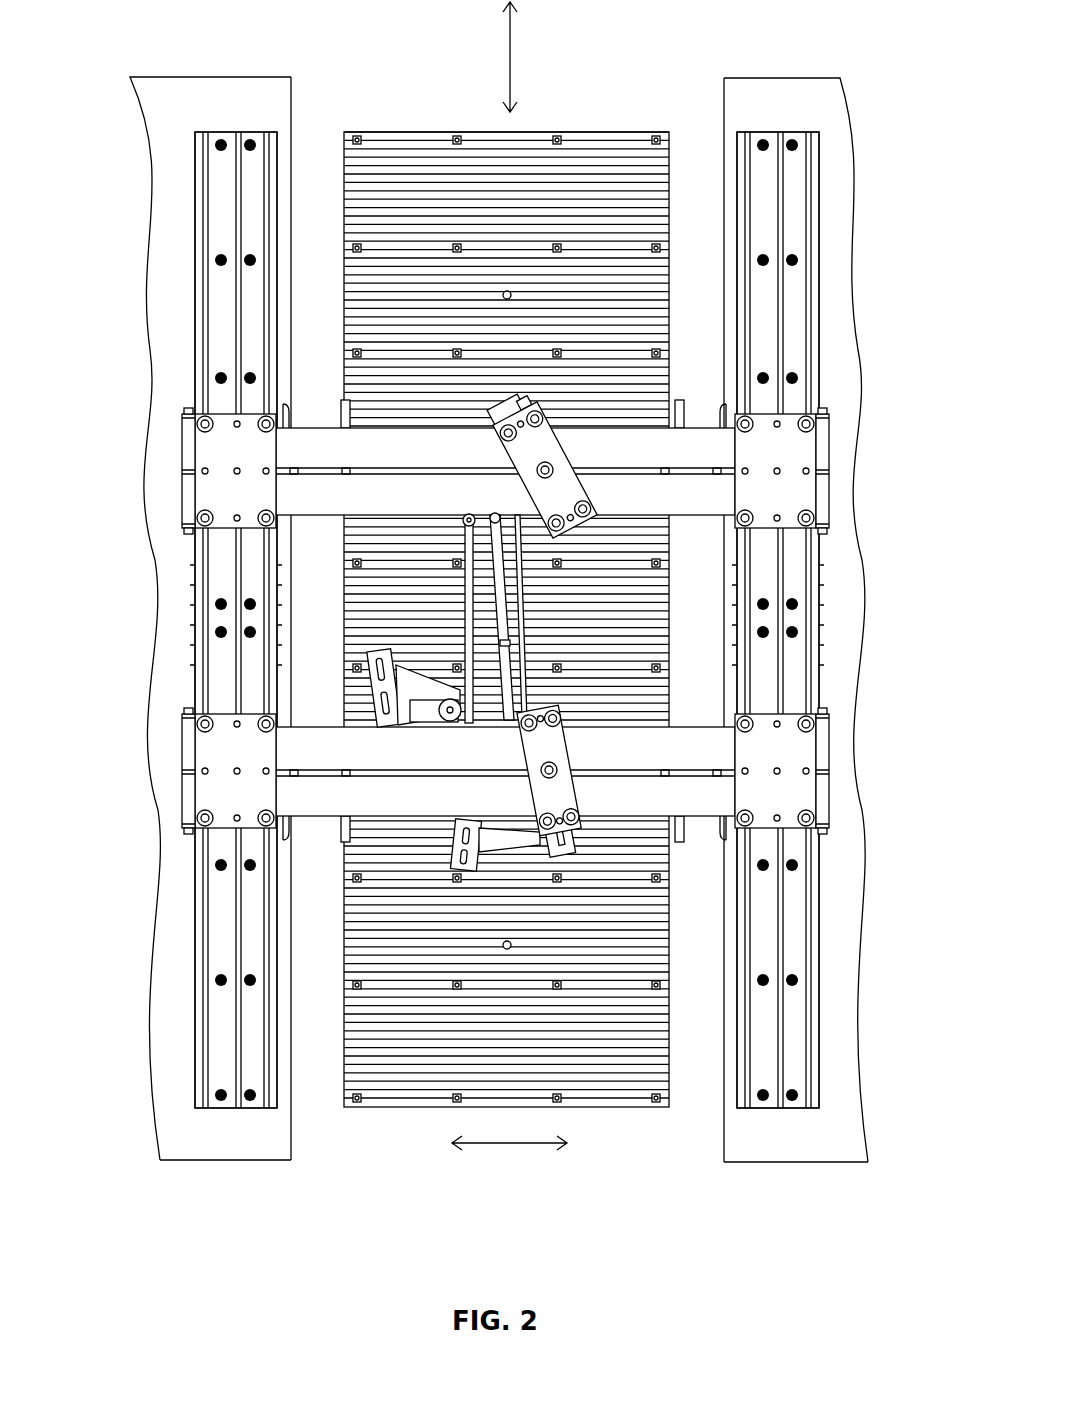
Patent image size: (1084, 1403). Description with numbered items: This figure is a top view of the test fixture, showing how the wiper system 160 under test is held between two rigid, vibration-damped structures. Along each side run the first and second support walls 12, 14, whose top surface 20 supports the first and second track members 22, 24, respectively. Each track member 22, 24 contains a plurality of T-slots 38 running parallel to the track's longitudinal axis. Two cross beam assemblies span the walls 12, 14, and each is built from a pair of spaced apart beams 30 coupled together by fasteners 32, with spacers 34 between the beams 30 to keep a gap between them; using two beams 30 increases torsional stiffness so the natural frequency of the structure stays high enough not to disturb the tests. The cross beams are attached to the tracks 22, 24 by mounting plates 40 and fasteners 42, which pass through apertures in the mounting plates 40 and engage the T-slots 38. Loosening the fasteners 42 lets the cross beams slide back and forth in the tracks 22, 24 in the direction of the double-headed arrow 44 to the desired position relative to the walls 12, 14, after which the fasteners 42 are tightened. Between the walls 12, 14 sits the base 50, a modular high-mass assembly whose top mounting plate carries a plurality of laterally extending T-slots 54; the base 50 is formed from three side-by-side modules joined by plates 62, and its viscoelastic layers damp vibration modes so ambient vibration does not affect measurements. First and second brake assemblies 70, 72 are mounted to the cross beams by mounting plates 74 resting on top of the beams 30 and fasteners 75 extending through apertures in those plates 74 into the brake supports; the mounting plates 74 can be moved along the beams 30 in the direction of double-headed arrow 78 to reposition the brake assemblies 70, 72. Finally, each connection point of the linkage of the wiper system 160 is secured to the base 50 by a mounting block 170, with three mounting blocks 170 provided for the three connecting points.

The first support wall 12 is at (192, 1137).
The second support wall 14 is at (778, 1140).
The top surface 20 is at (242, 1145).
The first track member 22 is at (222, 128).
The second track member 24 is at (795, 128).
The beam 30 is at (683, 418).
The fastener 32 is at (283, 422).
The spacer 34 is at (830, 478).
The T-slot 38 is at (250, 132).
The mounting plate 40 is at (205, 480).
The fastener 42 is at (197, 722).
The double-headed arrow 44 is at (510, 52).
The base 50 is at (398, 1113).
The T-slot 54 is at (398, 197).
The plate 62 is at (345, 420).
The first brake assembly 70 is at (575, 842).
The second brake assembly 72 is at (548, 418).
The mounting plate 74 is at (537, 440).
The fastener 75 is at (548, 472).
The double-headed arrow 78 is at (510, 1148).
The wiper system 160 is at (497, 580).
The mounting block 170 is at (410, 682).